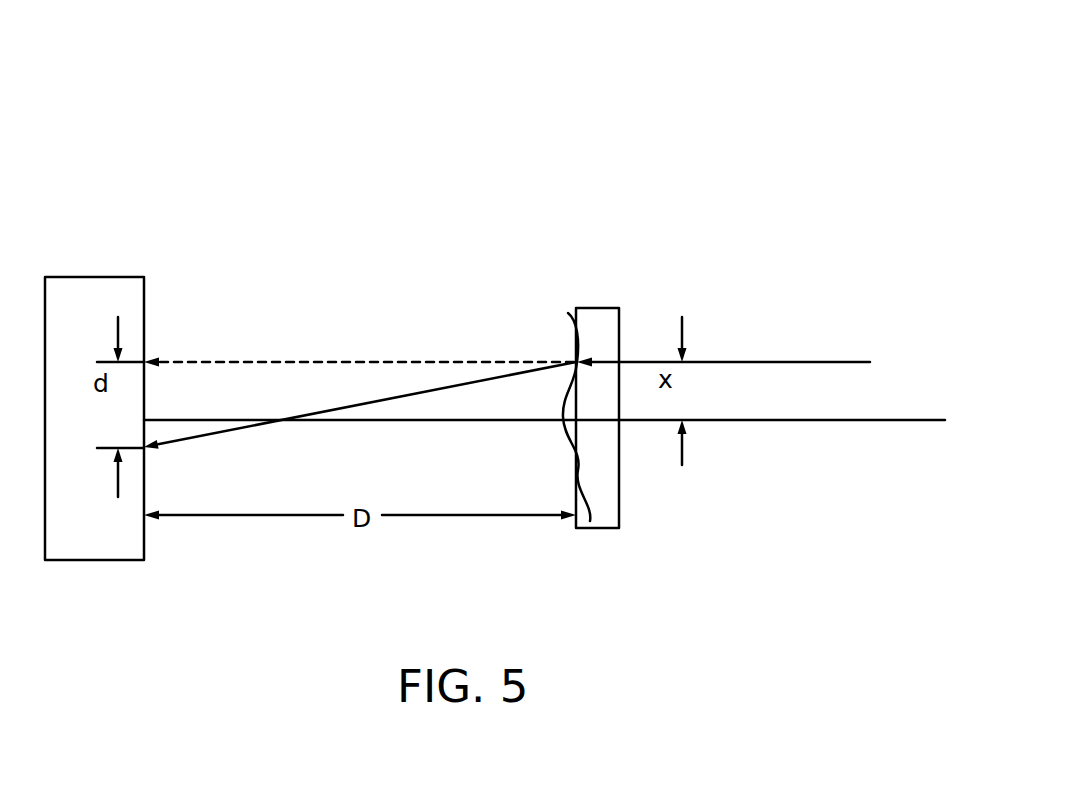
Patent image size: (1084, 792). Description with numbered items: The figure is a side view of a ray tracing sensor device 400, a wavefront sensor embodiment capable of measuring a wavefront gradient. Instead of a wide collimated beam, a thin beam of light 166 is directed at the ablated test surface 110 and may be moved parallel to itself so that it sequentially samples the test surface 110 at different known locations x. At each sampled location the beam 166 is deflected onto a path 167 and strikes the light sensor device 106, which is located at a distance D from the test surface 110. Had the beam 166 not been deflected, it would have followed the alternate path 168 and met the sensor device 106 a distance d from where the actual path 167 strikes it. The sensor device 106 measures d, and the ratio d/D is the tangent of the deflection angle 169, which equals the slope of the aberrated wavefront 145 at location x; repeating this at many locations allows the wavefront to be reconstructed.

The ray tracing sensor device 400 is at (633, 112).
The light sensor device 106 is at (76, 277).
The ablated test surface 110 is at (605, 308).
The aberrated wavefront 145 is at (562, 318).
The thin beam of light 166 is at (737, 362).
The deflected path 167 is at (443, 388).
The alternate path 168 is at (372, 362).
The deflection angle 169 is at (252, 420).